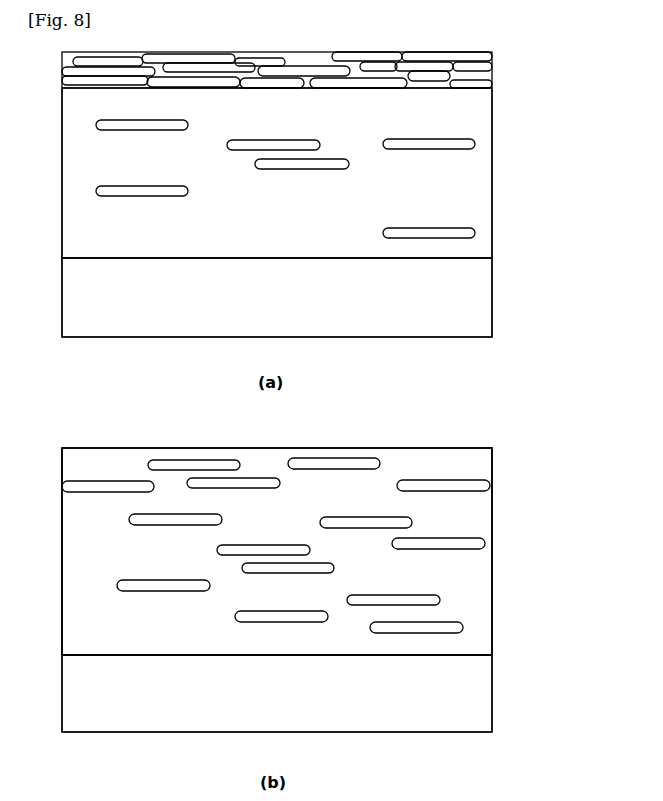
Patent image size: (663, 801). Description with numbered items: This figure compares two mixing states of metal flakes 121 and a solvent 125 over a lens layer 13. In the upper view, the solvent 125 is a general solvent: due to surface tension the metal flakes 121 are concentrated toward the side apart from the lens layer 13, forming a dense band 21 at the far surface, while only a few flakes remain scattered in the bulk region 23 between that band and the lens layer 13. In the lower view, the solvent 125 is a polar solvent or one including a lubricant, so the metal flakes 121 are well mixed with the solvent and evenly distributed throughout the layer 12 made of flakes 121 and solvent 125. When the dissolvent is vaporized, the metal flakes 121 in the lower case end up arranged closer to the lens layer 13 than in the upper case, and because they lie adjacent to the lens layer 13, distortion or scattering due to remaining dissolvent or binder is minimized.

The first nanowire layer (densely packed nanowires) 21 is at (475, 143).
The second layer with dispersed nanowires 23 is at (483, 191).
The lens layer 13 is at (483, 295).
The nanowire composite layer 12 is at (329, 551).
The metal flakes 121 is at (490, 485).
The solvent 125 is at (485, 521).